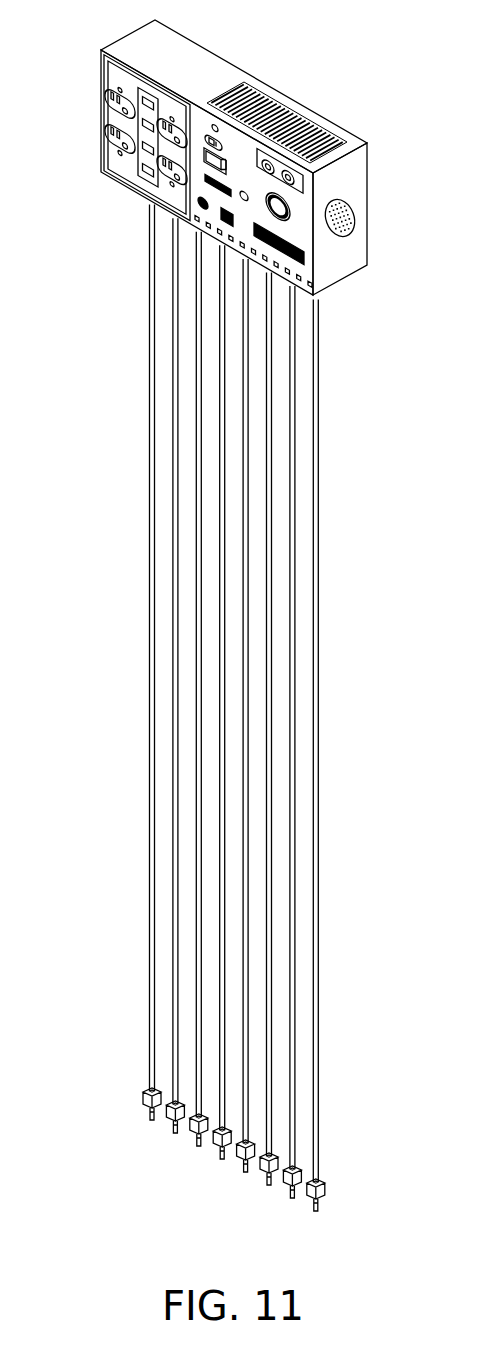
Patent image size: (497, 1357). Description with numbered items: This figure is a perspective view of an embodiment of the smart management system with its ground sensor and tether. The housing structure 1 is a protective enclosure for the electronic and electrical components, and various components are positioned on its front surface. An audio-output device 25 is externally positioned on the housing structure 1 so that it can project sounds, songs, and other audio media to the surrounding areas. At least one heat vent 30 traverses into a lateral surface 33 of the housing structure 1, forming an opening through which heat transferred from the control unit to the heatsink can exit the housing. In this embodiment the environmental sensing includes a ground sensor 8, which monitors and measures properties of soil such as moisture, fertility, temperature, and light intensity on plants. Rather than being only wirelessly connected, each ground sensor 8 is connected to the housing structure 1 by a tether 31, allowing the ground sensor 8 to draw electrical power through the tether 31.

The housing structure 1 is at (90, 150).
The lateral surface 33 is at (149, 47).
The heat vent 30 is at (243, 88).
The audio-output device 25 is at (355, 214).
The tether 31 is at (152, 692).
The ground sensor 8 is at (143, 1097).